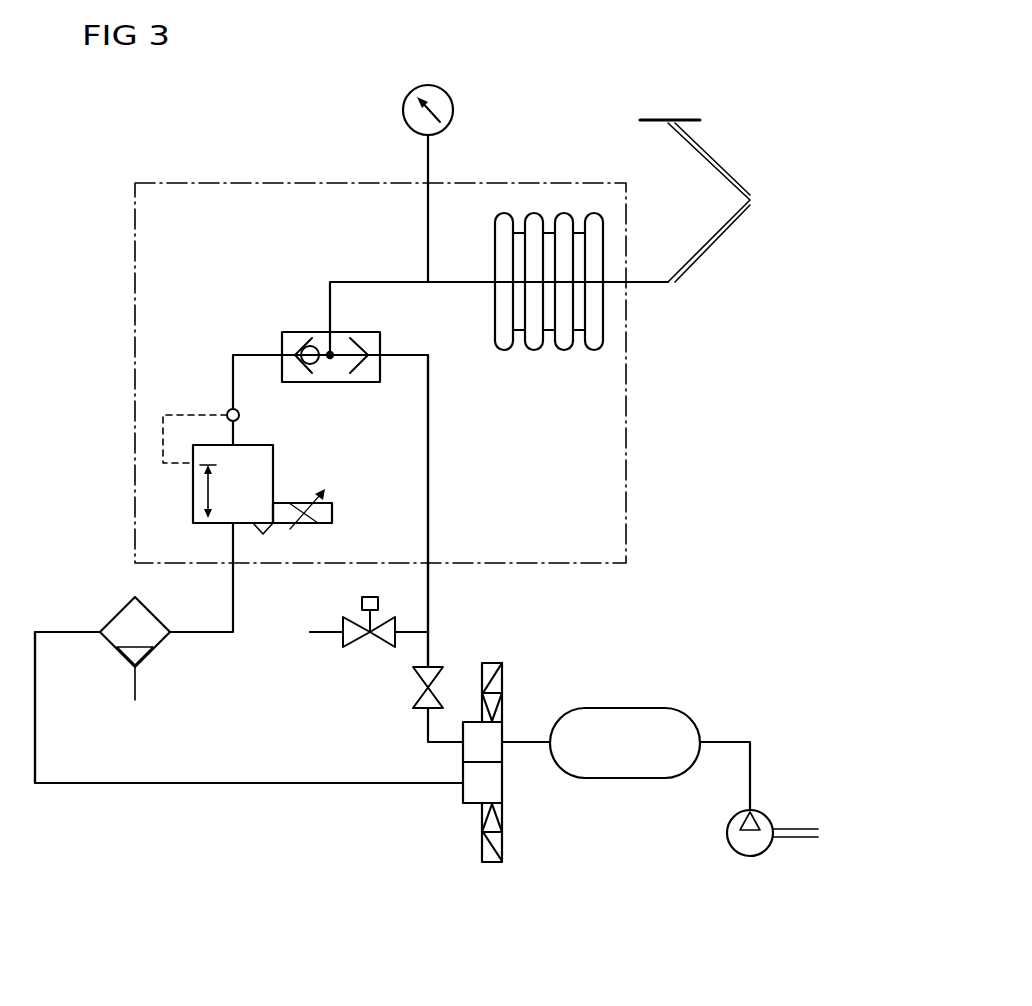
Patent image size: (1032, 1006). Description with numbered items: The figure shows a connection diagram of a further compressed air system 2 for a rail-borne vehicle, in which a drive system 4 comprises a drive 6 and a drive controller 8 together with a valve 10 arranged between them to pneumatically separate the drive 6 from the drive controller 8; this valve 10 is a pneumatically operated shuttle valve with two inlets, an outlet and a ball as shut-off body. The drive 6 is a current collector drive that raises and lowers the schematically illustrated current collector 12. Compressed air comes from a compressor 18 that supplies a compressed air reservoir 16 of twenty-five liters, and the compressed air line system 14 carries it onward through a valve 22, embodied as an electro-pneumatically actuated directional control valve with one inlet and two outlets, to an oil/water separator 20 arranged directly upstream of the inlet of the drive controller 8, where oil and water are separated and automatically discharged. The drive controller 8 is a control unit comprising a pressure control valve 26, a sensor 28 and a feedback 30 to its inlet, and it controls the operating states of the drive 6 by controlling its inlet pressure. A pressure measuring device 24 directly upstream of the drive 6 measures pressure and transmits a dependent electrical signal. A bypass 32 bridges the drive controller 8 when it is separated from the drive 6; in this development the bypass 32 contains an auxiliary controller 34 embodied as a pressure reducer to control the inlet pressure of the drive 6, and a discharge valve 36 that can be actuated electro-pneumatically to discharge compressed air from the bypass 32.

The compressed air system 2 is at (225, 811).
The drive system 4 is at (636, 454).
The drive 6 is at (535, 352).
The drive controller 8 is at (191, 500).
The valve 10 is at (302, 332).
The current collector 12 is at (721, 163).
The compressed air line system 14 is at (76, 787).
The compressed air reservoir 16 is at (626, 706).
The compressor 18 is at (748, 858).
The oil/water separator 20 is at (116, 615).
The valve 22 is at (457, 812).
The pressure measuring device 24 is at (454, 112).
The pressure control valve 26 is at (276, 478).
The sensor 28 is at (240, 416).
The feedback 30 is at (184, 414).
The bypass 32 is at (440, 590).
The auxiliary controller 34 is at (418, 675).
The discharge valve 36 is at (346, 640).